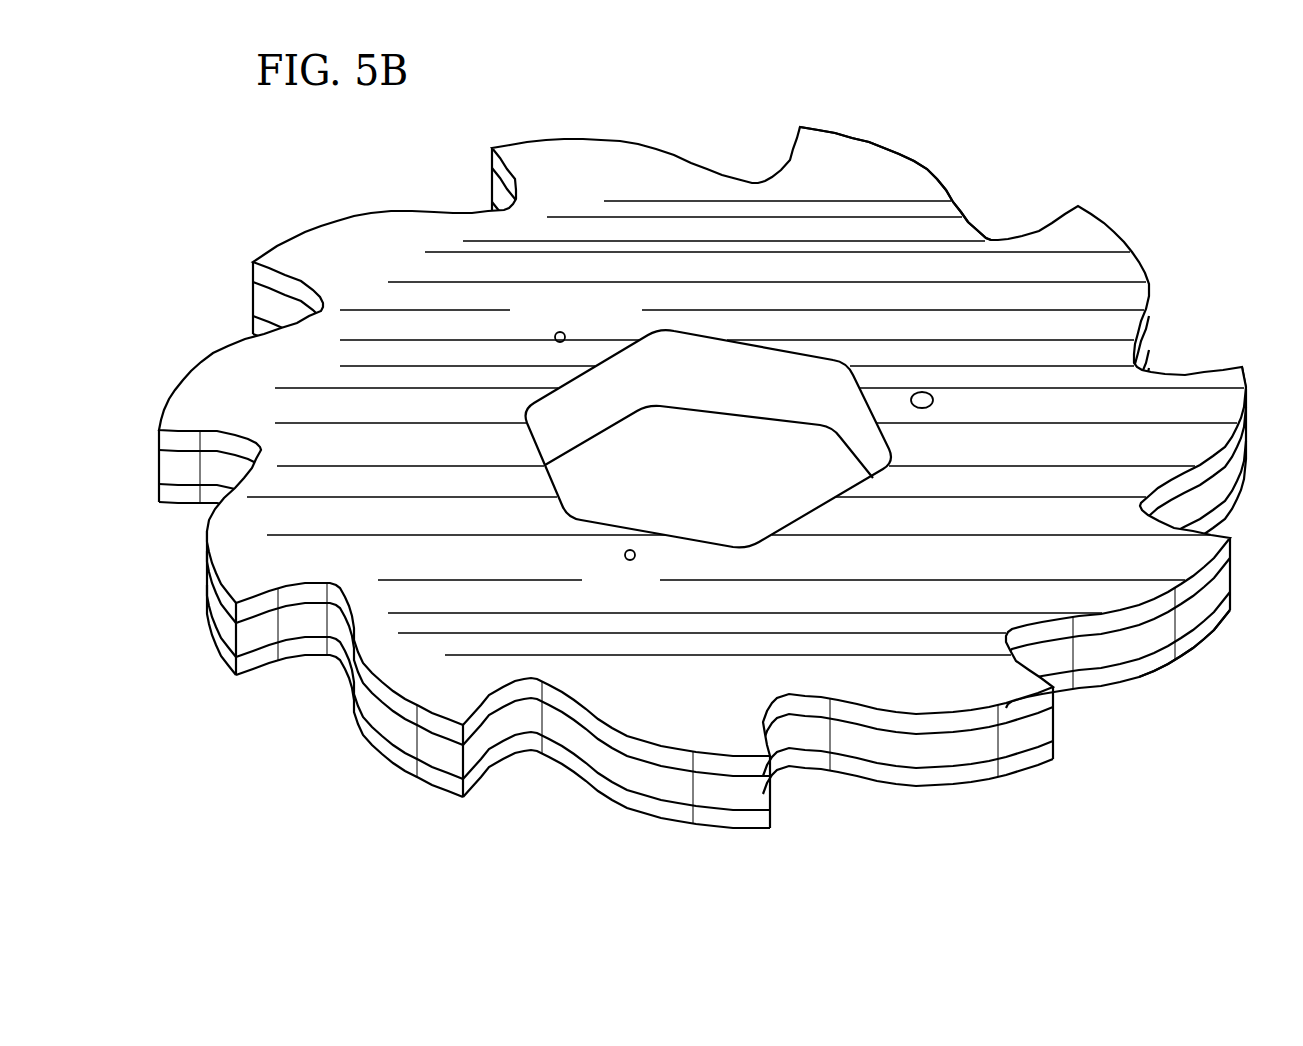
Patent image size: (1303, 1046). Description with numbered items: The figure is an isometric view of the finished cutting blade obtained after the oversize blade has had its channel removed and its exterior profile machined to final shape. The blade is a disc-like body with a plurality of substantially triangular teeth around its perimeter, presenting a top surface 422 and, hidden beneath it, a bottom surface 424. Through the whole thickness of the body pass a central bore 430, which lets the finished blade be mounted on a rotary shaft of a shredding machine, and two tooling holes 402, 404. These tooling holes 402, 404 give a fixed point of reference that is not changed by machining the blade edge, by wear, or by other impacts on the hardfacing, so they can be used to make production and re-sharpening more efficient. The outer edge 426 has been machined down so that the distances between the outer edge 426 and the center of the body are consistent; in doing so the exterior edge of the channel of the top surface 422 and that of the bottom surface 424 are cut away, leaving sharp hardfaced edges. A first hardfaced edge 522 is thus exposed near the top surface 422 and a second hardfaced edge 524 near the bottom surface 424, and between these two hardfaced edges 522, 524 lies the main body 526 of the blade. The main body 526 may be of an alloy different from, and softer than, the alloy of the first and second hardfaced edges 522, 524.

The tooling hole 402 is at (563, 333).
The tooling hole 404 is at (627, 560).
The top surface 422 is at (893, 186).
The bottom surface 424 is at (703, 494).
The outer edge 426 is at (1208, 630).
The central bore 430 is at (746, 425).
The first hardfaced edge 522 is at (641, 742).
The second hardfaced edge 524 is at (647, 802).
The main body 526 is at (760, 797).